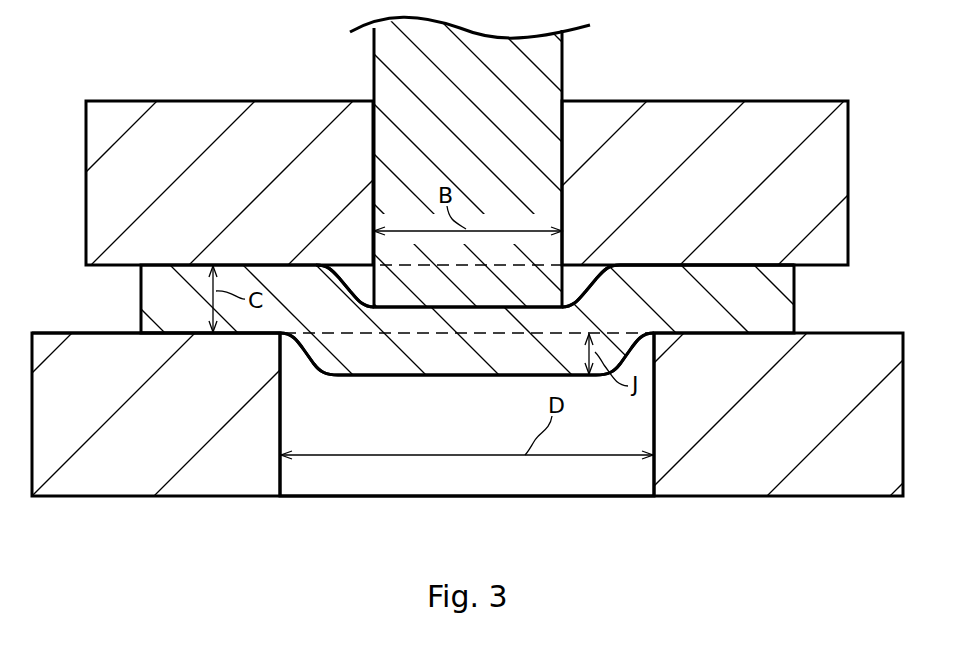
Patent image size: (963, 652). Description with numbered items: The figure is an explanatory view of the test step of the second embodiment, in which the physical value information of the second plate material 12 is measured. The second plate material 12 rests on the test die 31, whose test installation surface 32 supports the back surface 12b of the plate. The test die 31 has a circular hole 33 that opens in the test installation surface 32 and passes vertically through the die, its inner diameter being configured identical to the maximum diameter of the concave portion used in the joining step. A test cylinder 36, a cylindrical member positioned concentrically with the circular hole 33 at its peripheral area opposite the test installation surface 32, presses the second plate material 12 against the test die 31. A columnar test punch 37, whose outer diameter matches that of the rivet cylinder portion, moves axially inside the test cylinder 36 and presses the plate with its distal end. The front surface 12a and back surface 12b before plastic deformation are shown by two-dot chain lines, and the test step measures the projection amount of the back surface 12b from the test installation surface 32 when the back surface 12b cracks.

The second plate material 12 is at (786, 313).
The front surface 12a is at (566, 252).
The back surface 12b is at (442, 334).
The test die 31 is at (123, 477).
The test installation surface 32 is at (110, 330).
The circular hole 33 is at (283, 473).
The test cylinder 36 is at (702, 108).
The test punch 37 is at (553, 58).